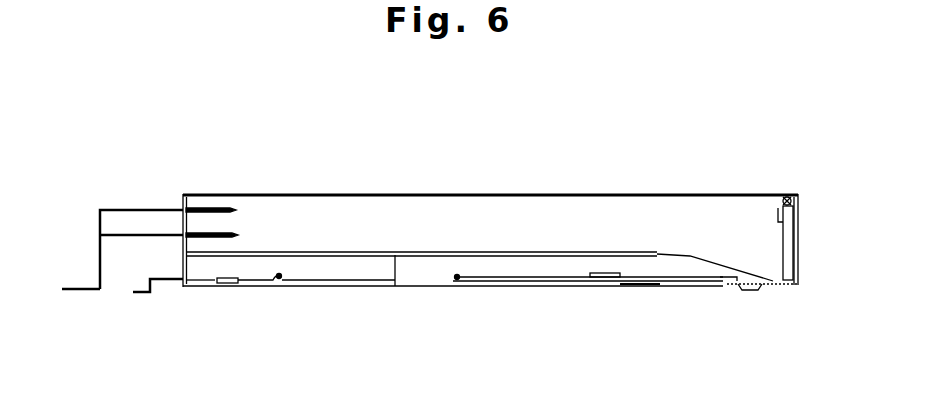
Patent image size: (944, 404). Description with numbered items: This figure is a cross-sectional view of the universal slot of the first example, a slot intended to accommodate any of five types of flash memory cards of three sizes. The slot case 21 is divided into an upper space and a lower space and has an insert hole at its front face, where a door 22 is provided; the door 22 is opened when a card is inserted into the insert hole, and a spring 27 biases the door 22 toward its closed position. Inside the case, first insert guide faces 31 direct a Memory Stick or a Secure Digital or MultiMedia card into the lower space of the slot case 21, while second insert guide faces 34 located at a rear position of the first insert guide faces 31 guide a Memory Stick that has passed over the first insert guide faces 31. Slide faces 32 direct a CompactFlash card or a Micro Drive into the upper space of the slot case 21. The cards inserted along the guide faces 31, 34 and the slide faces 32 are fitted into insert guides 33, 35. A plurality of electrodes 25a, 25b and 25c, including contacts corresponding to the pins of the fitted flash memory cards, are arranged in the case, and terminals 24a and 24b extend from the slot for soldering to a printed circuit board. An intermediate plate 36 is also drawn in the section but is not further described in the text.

The slot case 21 is at (418, 193).
The door 22 is at (798, 243).
The terminal 24a is at (122, 210).
The terminal 24b is at (133, 292).
The electrode 25a is at (203, 210).
The electrode 25b is at (262, 288).
The electrode 25c is at (638, 286).
The spring 27 is at (798, 202).
The first insert guide face 31 is at (707, 284).
The slide face 32 is at (687, 252).
The insert guide 33 is at (513, 270).
The second insert guide face 34 is at (397, 270).
The insert guide 35 is at (330, 275).
The intermediate plate 36 is at (563, 225).